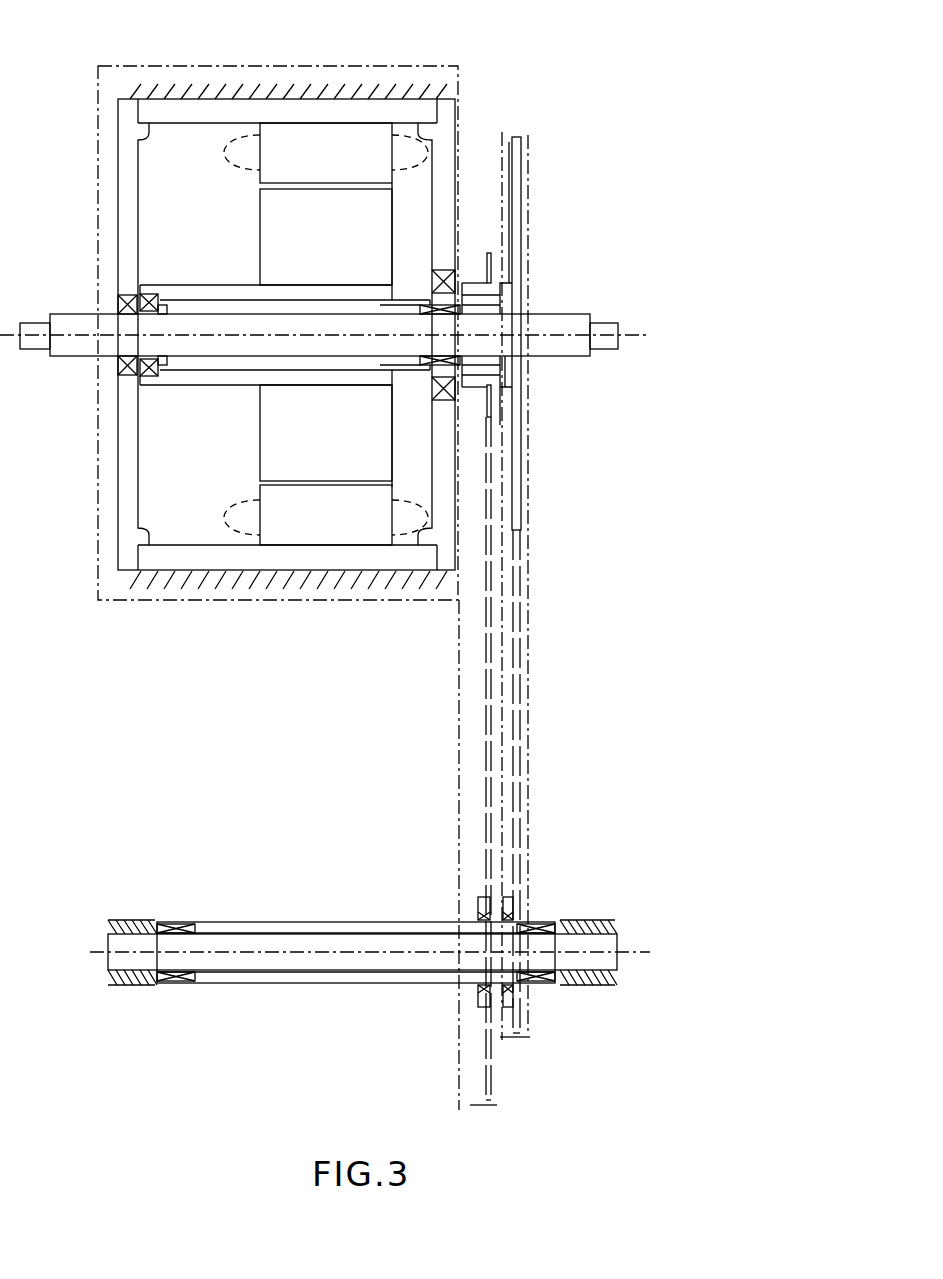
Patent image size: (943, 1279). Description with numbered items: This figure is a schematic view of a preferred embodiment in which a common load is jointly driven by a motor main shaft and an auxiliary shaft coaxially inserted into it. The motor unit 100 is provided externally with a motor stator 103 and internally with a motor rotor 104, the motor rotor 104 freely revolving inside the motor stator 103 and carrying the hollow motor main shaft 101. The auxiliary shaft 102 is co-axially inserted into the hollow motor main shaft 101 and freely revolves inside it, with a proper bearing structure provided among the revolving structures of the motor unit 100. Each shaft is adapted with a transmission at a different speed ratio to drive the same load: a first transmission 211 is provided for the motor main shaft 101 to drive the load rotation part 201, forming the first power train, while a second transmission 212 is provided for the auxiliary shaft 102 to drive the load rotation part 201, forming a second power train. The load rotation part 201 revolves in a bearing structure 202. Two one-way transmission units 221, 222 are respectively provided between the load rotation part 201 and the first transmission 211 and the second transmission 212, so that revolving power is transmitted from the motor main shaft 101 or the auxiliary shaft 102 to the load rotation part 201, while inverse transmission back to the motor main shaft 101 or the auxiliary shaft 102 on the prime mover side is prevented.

The motor unit 100 is at (175, 80).
The hollow motor main shaft 101 is at (405, 296).
The auxiliary shaft 102 is at (535, 336).
The motor stator 103 is at (317, 135).
The motor rotor 104 is at (362, 210).
The first transmission 211 is at (462, 718).
The second transmission 212 is at (528, 648).
The load rotation part 201 is at (345, 922).
The bearing structure 202 is at (205, 947).
The one-way transmission unit 221 is at (478, 915).
The one-way transmission unit 222 is at (515, 920).